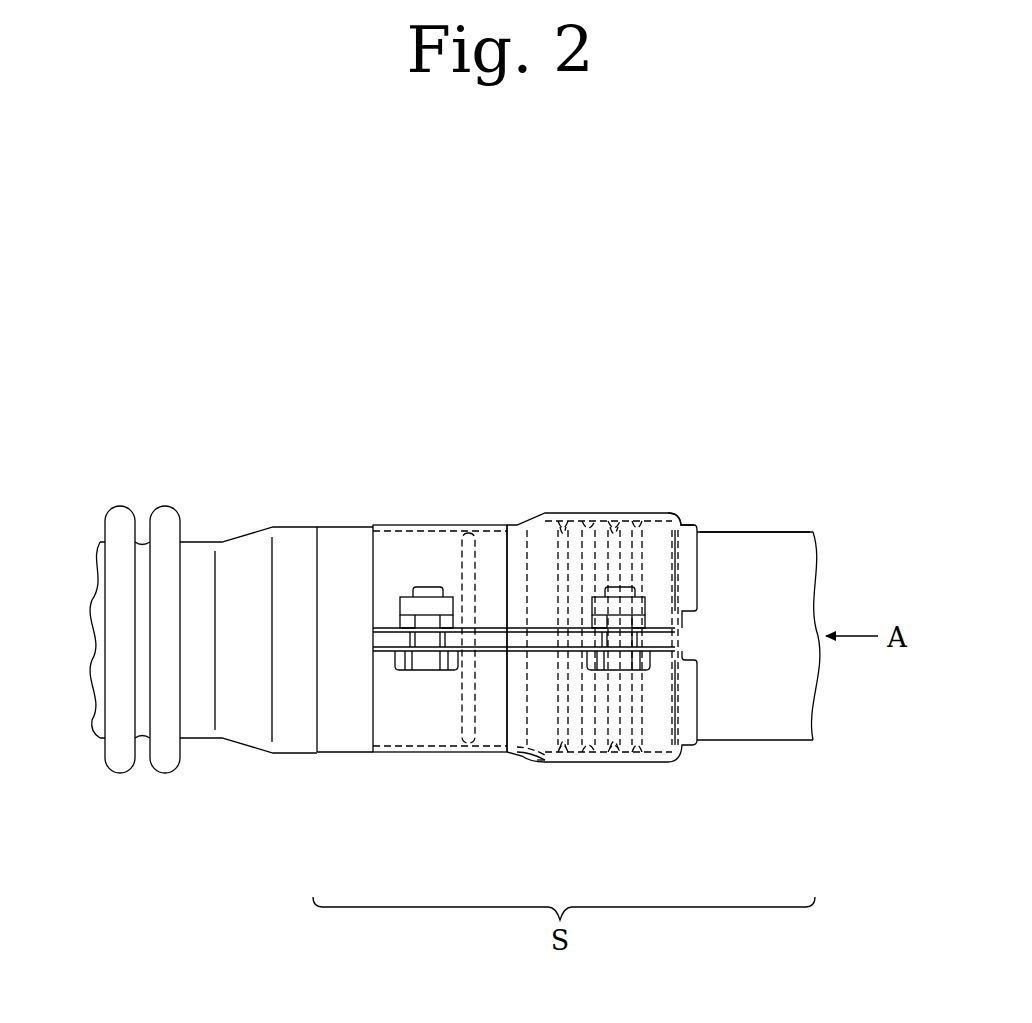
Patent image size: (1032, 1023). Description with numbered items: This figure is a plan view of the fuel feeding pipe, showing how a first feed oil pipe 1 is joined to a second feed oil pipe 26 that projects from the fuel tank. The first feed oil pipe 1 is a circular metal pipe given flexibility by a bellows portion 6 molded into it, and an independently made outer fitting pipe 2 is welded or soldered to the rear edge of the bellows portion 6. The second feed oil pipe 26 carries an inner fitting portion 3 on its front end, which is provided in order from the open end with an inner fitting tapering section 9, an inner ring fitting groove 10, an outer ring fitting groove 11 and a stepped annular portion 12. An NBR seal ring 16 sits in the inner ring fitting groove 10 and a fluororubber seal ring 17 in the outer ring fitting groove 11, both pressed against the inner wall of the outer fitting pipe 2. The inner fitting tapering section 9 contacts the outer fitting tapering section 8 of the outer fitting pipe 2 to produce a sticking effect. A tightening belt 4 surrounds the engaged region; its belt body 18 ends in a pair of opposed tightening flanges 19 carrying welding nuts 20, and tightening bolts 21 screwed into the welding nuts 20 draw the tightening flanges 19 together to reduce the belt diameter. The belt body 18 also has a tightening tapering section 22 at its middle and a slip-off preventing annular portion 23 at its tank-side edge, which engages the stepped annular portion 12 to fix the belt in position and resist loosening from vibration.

The first feed oil pipe 1 is at (236, 540).
The outer fitting pipe 2 is at (365, 652).
The inner fitting portion 3 is at (723, 645).
The tightening belt 4 is at (531, 512).
The bellows portion 6 is at (165, 506).
The outer fitting tapering section 8 is at (522, 758).
The inner fitting tapering section 9 is at (537, 762).
The inner ring fitting groove 10 is at (583, 745).
The outer ring fitting groove 11 is at (617, 745).
The stepped annular portion 12 is at (677, 749).
The NBR seal ring 16 is at (573, 750).
The fluororubber seal ring 17 is at (615, 747).
The belt body 18 is at (382, 717).
The tightening flanges 19 is at (493, 627).
The welding nuts 20 is at (407, 603).
The tightening bolts 21 is at (427, 662).
The tightening tapering section 22 is at (530, 759).
The slip-off preventing annular portion 23 is at (687, 518).
The second feed oil pipe 26 is at (793, 529).